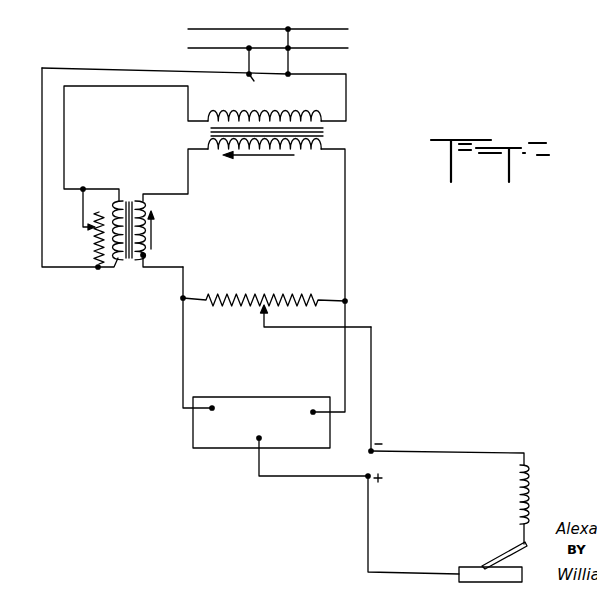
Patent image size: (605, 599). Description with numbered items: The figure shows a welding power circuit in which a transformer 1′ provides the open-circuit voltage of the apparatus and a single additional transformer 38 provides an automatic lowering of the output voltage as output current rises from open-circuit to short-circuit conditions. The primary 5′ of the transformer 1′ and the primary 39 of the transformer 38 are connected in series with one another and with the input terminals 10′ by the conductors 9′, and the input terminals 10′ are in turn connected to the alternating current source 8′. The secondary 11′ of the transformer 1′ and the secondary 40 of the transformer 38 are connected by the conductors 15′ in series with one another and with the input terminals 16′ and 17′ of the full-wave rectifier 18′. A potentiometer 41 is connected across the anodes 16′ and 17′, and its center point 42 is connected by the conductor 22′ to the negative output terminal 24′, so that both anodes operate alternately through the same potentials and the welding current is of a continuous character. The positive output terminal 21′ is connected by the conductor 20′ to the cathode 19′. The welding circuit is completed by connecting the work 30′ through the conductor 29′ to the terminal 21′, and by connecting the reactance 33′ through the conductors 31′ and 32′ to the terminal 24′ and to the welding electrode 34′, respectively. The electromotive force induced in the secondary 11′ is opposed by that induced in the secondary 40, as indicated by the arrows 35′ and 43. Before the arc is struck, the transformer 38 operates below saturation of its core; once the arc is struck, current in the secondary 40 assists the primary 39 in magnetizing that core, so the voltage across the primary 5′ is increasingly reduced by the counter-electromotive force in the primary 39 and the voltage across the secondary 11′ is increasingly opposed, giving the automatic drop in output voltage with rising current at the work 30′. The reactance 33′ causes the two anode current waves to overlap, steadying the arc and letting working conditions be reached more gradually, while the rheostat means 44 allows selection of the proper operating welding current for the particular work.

The alternating current source 8′ is at (318, 34).
The conductors 9′ is at (124, 81).
The input terminals 10′ is at (287, 74).
The primary 5′ is at (276, 118).
The transformer 1′ is at (333, 135).
The secondary 11′ is at (294, 149).
The arrow 35′ is at (256, 155).
The conductors 15′ is at (188, 173).
The transformer 38 is at (128, 196).
The primary 39 is at (115, 252).
The arrow 43 is at (152, 236).
The secondary 40 is at (144, 254).
The rheostat means 44 is at (90, 246).
The potentiometer 41 is at (262, 285).
The center point 42 is at (258, 308).
The conductor 22′ is at (372, 392).
The full-wave rectifier 18′ is at (220, 437).
The input terminal (anode) 16′ is at (213, 404).
The input terminal (anode) 17′ is at (314, 408).
The cathode 19′ is at (255, 438).
The conductor 20′ is at (303, 475).
The positive output terminal 21′ is at (365, 477).
The negative output terminal 24′ is at (371, 441).
The conductor 29′ is at (368, 538).
The conductor 31′ is at (481, 441).
The reactance 33′ is at (527, 482).
The conductor 32′ is at (524, 530).
The work 30′ is at (475, 553).
The welding electrode 34′ is at (512, 552).